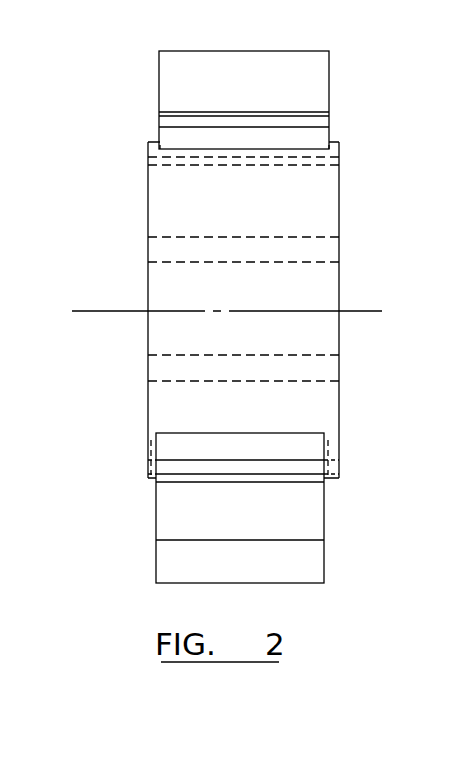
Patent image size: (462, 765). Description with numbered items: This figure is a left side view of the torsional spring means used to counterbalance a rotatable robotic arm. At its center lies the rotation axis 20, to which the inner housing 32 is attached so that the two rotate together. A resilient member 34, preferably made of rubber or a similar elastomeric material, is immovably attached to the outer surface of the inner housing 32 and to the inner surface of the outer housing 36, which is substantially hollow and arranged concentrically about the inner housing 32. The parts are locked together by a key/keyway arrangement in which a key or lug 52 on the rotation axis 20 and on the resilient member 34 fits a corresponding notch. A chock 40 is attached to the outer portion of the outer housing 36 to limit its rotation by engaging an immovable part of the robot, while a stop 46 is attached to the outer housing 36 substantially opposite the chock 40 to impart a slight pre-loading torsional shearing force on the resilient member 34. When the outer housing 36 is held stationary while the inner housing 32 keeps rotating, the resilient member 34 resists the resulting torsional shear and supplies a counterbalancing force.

The rotation axis 20 is at (300, 311).
The inner housing 32 is at (322, 252).
The resilient member 34 is at (312, 204).
The outer housing 36 is at (340, 148).
The chock 40 is at (318, 520).
The stop 46 is at (316, 81).
The key or lug 52 is at (150, 160).